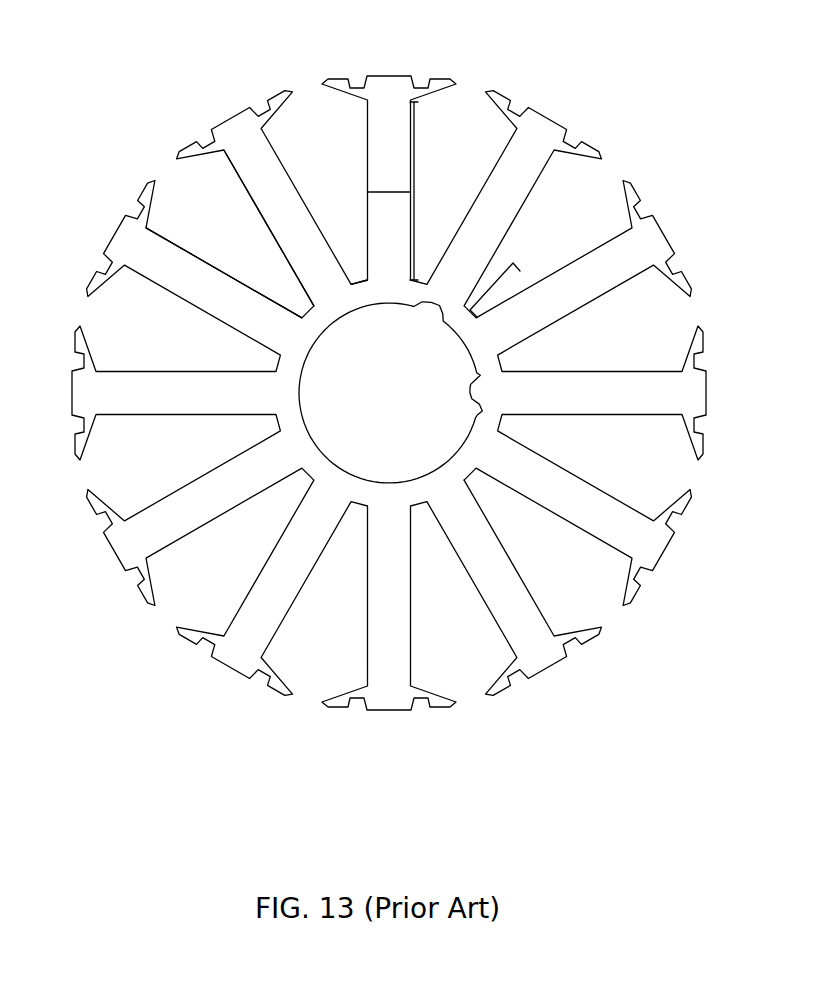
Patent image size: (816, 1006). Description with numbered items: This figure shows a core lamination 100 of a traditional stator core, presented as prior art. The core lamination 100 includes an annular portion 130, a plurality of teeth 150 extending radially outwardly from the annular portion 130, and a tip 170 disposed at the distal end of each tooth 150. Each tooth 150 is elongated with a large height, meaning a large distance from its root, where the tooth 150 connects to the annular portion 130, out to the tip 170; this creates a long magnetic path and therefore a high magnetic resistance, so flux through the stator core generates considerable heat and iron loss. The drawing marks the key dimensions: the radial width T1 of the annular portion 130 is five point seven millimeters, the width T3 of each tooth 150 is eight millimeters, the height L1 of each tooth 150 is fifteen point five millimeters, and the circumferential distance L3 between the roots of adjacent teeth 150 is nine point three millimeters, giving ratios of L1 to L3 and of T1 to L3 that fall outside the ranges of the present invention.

The core lamination 100 is at (389, 426).
The annular portion 130 is at (312, 468).
The tooth 150 is at (390, 583).
The tip 170 is at (580, 640).
The radial width of annular portion T1 is at (358, 283).
The width of tooth T3 is at (389, 182).
The height of tooth L1 is at (425, 191).
The circumferential distance between roots of adjacent teeth L3 is at (504, 284).